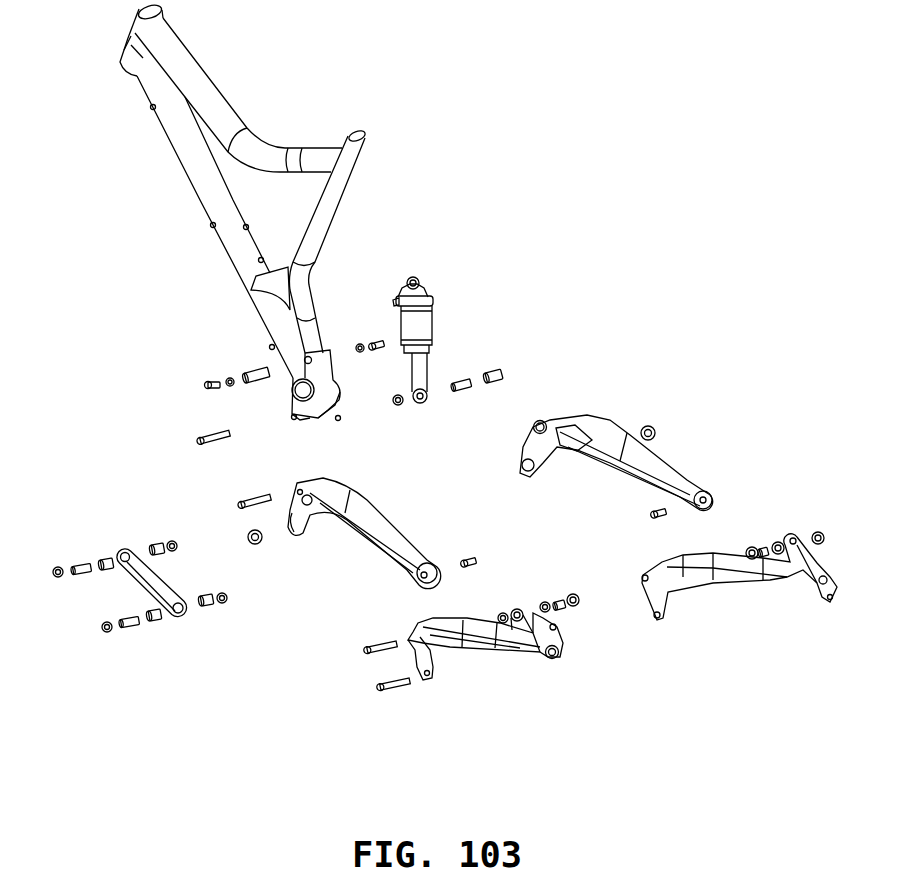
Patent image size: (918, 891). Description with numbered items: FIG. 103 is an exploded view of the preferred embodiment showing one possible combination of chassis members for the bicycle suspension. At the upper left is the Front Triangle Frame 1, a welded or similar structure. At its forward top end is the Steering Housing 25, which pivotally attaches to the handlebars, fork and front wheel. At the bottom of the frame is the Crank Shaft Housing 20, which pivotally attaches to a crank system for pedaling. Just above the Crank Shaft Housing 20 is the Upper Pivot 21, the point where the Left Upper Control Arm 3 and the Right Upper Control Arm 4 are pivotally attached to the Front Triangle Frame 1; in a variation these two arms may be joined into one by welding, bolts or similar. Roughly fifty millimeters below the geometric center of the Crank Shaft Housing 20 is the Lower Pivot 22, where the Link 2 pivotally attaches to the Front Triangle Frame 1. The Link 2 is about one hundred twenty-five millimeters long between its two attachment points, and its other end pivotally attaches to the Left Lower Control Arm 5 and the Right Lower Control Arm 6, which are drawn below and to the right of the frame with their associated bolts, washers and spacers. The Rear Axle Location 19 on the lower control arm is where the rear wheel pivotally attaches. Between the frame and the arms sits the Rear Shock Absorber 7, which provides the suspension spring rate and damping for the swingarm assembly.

The Front Triangle Frame 1 is at (233, 95).
The Steering Housing 25 is at (125, 62).
The Upper Pivot 21 is at (306, 357).
The Crank Shaft Housing 20 is at (293, 390).
The Lower Pivot 22 is at (293, 418).
The Rear Shock Absorber 7 is at (435, 320).
The Link 2 is at (168, 577).
The Left Upper Control Arm 3 is at (350, 482).
The Right Upper Control Arm 4 is at (617, 423).
The Left Lower Control Arm 5 is at (477, 617).
The Rear Axle Location 19 is at (556, 660).
The Right Lower Control Arm 6 is at (715, 552).